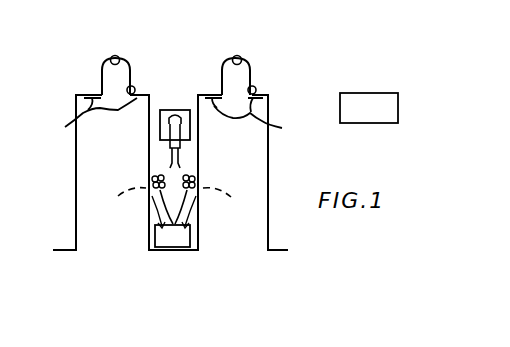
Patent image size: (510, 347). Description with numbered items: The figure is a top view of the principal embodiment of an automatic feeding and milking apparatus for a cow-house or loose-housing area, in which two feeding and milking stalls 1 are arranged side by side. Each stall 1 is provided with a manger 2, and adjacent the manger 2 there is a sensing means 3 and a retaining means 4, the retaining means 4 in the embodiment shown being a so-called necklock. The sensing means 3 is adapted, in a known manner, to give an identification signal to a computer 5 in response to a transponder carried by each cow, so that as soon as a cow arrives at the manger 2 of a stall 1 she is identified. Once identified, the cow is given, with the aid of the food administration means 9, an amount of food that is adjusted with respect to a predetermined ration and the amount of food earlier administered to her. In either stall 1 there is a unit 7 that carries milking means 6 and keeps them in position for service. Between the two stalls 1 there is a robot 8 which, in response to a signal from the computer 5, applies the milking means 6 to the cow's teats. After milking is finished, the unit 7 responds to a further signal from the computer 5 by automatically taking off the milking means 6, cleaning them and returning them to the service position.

The feeding and milking stall 1 is at (114, 225).
The manger 2 is at (100, 77).
The sensing means 3 is at (132, 86).
The retaining means 4 is at (171, 118).
The computer 5 is at (360, 91).
The milking means 6 is at (151, 185).
The unit 7 is at (173, 237).
The robot 8 is at (171, 110).
The food administration means 9 is at (112, 56).